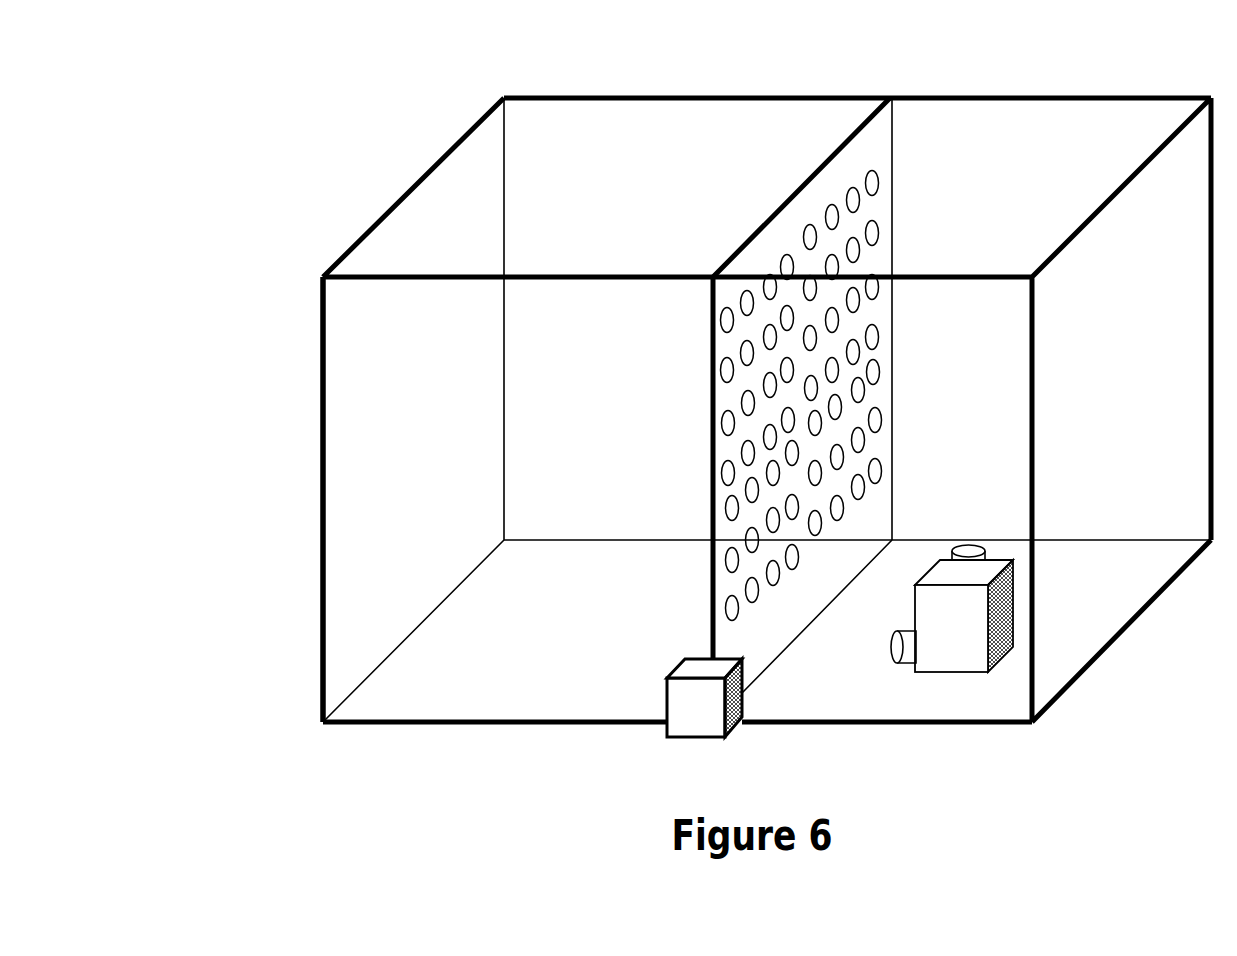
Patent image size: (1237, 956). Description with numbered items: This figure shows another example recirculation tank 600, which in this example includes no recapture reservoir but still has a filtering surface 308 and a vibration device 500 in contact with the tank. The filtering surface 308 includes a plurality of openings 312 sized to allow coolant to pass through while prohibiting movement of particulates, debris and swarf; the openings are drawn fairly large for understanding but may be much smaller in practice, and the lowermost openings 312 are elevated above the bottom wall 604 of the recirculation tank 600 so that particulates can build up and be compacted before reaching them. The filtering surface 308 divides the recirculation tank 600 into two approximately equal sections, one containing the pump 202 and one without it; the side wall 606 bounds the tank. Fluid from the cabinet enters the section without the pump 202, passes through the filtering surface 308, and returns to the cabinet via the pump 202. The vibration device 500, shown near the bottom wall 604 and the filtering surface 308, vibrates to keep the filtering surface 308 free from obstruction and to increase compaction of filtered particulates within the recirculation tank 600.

The recirculation tank 600 is at (310, 500).
The side wall of enclosure 606 is at (320, 597).
The bottom wall 604 is at (572, 718).
The filtering surface 308 is at (870, 147).
The openings 312 is at (890, 473).
The vibration device 500 is at (666, 697).
The pump 202 is at (952, 672).